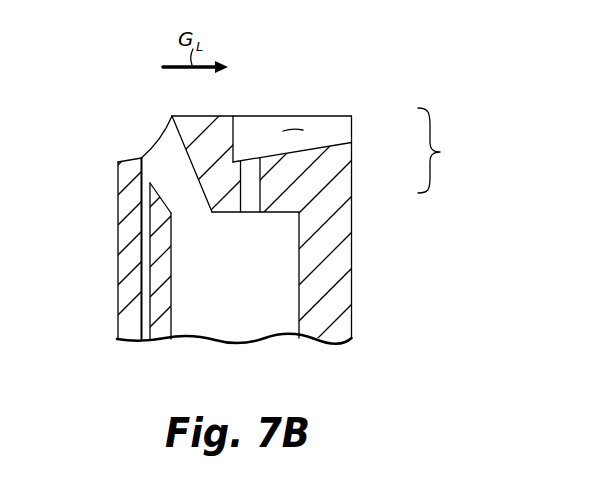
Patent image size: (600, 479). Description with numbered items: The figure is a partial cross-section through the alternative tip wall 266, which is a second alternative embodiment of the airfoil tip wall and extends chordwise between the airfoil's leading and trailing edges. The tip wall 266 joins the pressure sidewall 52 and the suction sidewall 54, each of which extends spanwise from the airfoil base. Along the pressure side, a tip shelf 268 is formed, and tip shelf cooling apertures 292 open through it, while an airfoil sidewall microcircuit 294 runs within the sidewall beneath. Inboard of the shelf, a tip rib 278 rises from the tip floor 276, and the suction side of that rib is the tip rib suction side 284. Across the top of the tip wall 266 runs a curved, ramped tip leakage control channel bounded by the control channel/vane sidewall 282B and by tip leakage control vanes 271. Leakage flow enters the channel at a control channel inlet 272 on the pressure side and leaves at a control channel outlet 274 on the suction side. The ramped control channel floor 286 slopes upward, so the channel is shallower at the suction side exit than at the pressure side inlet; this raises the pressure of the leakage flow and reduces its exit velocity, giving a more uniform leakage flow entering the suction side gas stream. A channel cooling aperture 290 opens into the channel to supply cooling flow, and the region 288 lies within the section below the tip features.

The pressure sidewall 52 is at (118, 305).
The suction sidewall 54 is at (352, 288).
The tip wall 266 is at (452, 150).
The tip shelf 268 is at (167, 126).
The tip leakage control vanes 271 is at (356, 105).
The control channel inlets 272 is at (241, 154).
The control channel outlets 274 is at (371, 127).
The tip floor 276 is at (210, 117).
The tip rib 278 is at (191, 118).
The control channel/vane sidewall 282B is at (293, 128).
The tip rib suction side 284 is at (238, 132).
The ramped control channel floor 286 is at (319, 148).
The channel 288 is at (210, 310).
The channel cooling aperture 290 is at (252, 208).
The tip shelf cooling apertures 292 is at (173, 192).
The airfoil sidewall microcircuit 294 is at (144, 360).